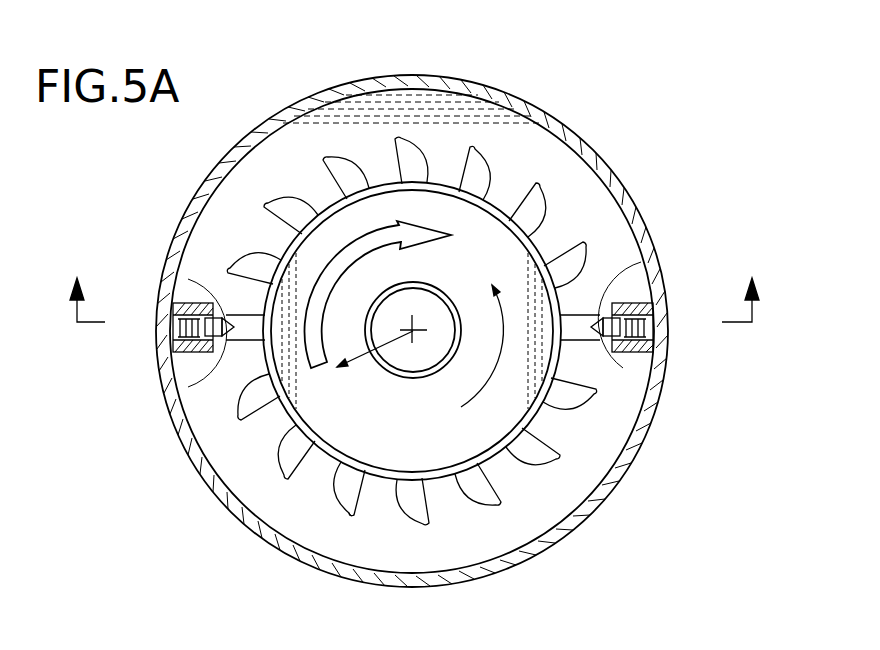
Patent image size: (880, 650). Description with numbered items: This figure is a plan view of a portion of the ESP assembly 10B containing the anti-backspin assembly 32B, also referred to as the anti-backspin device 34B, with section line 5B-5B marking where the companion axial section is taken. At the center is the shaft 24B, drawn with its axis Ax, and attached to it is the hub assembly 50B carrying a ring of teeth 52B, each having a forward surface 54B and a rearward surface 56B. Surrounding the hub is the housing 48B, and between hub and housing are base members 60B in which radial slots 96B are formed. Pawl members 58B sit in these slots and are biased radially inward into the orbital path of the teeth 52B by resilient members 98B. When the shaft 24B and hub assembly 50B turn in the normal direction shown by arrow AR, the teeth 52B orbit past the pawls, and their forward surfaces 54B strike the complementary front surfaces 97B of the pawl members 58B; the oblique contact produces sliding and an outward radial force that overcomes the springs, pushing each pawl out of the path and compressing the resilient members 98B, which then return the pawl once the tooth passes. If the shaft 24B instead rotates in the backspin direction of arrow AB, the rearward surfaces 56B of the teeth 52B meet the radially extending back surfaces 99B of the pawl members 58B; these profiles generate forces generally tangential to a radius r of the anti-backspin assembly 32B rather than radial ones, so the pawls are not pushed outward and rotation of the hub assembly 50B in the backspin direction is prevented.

The ESP assembly 10B is at (305, 78).
The anti-backspin assembly 32B is at (551, 88).
The housing 48B is at (603, 503).
The teeth 52B is at (565, 190).
The back surfaces of pawl members 99B is at (258, 298).
The hub assembly 50B is at (290, 407).
The anti-backspin device 34B is at (383, 150).
The forward surfaces of teeth 54B is at (337, 490).
The rearward surfaces of teeth 56B is at (367, 512).
The shaft 24B is at (385, 373).
The axis Ax is at (417, 322).
The radius r is at (353, 352).
The arrow indicating direction of normal rotation AR is at (322, 283).
The arrow indicating backspin direction AB is at (458, 359).
The radial slots 96B is at (173, 330).
The resilient members 98B is at (655, 322).
The base members 60B is at (657, 298).
The front surfaces of pawl members 97B is at (607, 300).
The pawl members 58B is at (232, 343).
The section line 5B- 5B is at (406, 280).